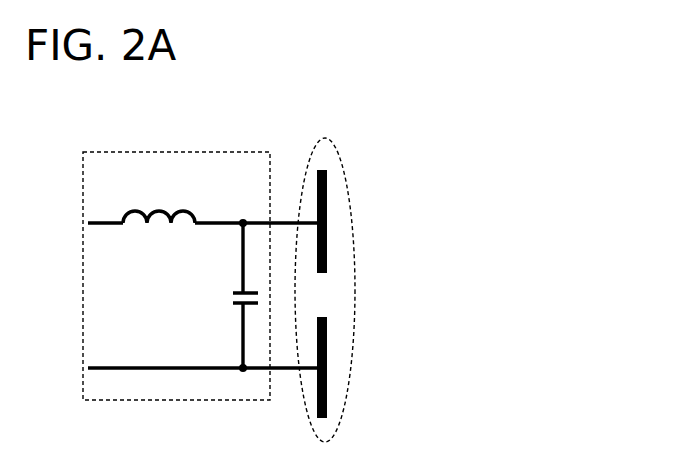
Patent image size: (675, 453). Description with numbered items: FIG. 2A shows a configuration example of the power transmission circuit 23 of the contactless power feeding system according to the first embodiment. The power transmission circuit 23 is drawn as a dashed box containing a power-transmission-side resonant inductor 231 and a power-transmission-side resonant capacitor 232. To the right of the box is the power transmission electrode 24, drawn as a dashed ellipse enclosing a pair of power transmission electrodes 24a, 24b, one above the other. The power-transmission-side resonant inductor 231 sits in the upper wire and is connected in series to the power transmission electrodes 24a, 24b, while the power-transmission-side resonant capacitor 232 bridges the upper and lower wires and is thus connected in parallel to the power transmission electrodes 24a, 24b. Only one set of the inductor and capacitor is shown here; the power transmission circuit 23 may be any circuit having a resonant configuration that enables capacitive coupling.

The power transmission circuit 23 is at (140, 152).
The power-transmission-side resonant inductor 231 is at (151, 213).
The power-transmission-side resonant capacitor 232 is at (237, 292).
The power transmission electrode 24 is at (342, 157).
The power transmission electrode 24a is at (327, 211).
The power transmission electrode 24b is at (327, 350).